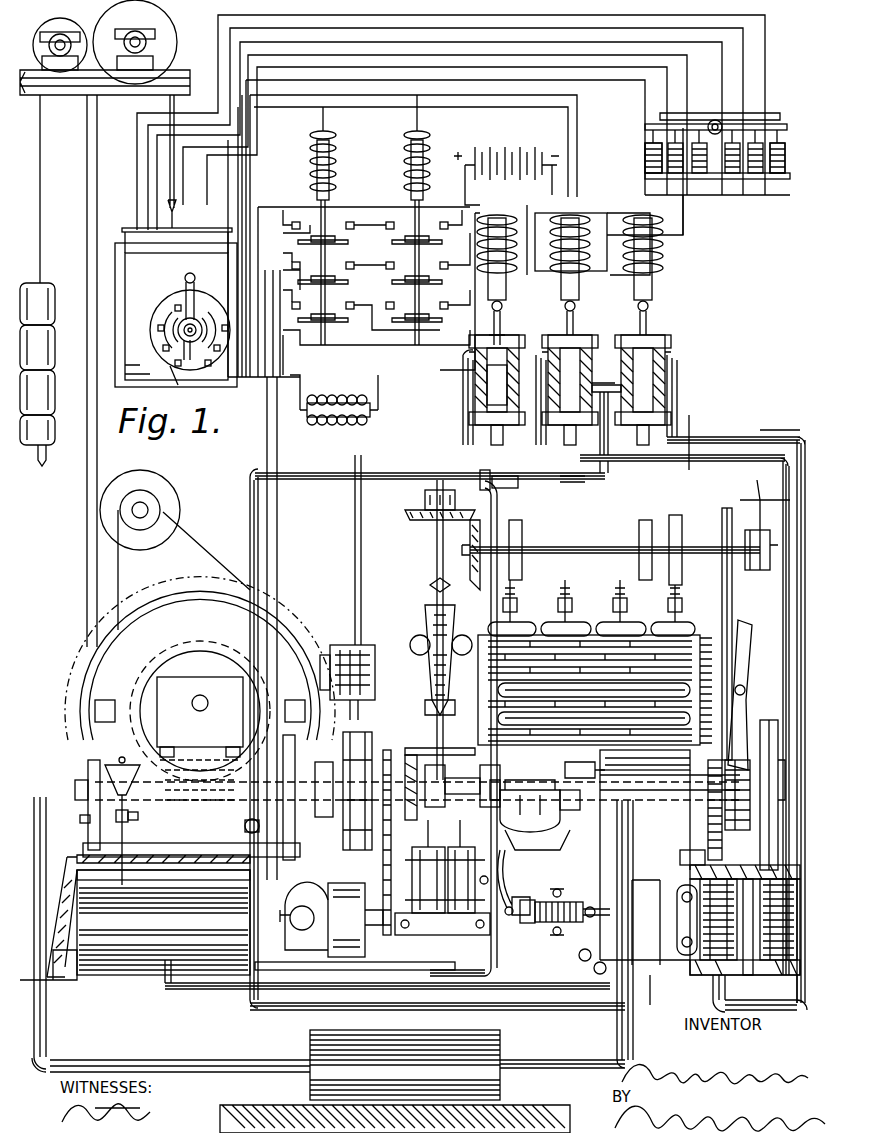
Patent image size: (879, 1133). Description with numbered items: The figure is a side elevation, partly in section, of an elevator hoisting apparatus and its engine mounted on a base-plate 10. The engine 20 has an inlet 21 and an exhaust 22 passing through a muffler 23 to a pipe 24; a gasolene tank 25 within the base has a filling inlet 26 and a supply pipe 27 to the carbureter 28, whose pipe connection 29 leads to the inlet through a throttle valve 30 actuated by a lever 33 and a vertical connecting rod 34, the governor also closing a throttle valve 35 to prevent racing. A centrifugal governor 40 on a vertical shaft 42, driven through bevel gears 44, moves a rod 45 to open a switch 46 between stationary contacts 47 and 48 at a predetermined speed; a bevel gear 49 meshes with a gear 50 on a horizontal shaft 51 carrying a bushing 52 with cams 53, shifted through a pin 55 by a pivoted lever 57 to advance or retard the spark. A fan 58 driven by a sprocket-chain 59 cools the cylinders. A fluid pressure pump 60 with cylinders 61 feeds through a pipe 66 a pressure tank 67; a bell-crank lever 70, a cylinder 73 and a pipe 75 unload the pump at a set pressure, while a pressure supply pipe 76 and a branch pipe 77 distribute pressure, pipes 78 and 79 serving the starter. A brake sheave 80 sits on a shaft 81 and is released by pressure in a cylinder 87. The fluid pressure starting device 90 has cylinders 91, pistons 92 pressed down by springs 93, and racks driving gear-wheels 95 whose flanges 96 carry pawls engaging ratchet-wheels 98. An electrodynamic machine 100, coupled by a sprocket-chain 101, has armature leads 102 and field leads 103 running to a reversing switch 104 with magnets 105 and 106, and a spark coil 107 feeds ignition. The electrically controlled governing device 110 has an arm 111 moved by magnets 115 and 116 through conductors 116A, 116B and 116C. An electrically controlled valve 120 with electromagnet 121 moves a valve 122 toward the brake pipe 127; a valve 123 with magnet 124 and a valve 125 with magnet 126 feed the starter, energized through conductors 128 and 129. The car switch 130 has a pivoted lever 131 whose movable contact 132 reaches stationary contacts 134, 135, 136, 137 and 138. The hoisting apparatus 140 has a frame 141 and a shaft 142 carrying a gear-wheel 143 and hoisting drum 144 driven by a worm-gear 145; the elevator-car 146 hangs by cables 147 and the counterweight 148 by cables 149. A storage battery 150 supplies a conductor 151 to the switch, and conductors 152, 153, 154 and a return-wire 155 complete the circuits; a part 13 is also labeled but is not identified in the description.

The base-plate 10 is at (70, 865).
The pump plunger 13 is at (446, 866).
The engine 20 is at (655, 625).
The engine inlet 21 is at (645, 850).
The outlet or exhaust 22 is at (695, 690).
The muffler 23 is at (498, 1041).
The pipe 24 is at (78, 805).
The gasolene tank 25 is at (130, 975).
The filling inlet 26 is at (122, 810).
The supply pipe 27 is at (437, 1005).
The carbureter 28 is at (534, 815).
The pipe connection 29 is at (570, 810).
The throttle valve 30 is at (588, 798).
The lever 33 is at (670, 788).
The vertical connecting rod 34 is at (690, 395).
The throttle valve 35 is at (585, 768).
The centrifugal governor 40 is at (428, 613).
The vertical shaft 42 is at (437, 553).
The bevel gears 44 is at (405, 750).
The rod 45 is at (530, 508).
The switch 46 is at (510, 485).
The stationary contact 47 is at (465, 455).
The stationary contact 48 is at (430, 498).
The bevel gear 49 is at (414, 533).
The gear 50 is at (474, 574).
The horizontal shaft 51 is at (466, 555).
The bushing 52 is at (615, 565).
The cams 53 is at (518, 545).
The pin 55 is at (668, 540).
The pivoted lever 57 is at (761, 525).
The fan 58 is at (750, 695).
The sprocket-chain 59 is at (732, 585).
The fluid pressure pump 60 is at (400, 842).
The cylinders 61 is at (417, 833).
The pipe 66 is at (332, 934).
The pressure tank 67 is at (658, 990).
The bell-crank lever 70 is at (510, 886).
The cylinder 73 is at (580, 898).
The pipe 75 is at (599, 940).
The pressure supply pipe 76 is at (671, 746).
The branch pipe 77 is at (168, 925).
The pipe 78 is at (780, 650).
The pipe 79 is at (735, 438).
The brake sheave 80 is at (355, 732).
The shaft 81 is at (78, 782).
The cylinder 87 is at (375, 670).
The fluid pressure starting device 90 is at (706, 852).
The cylinders 91 is at (738, 927).
The pistons 92 is at (744, 993).
The springs 93 is at (769, 989).
The gear-wheels 95 is at (708, 808).
The flanges 96 is at (752, 742).
The ratchet-wheels 98 is at (772, 786).
The electrodynamic machine 100 is at (370, 935).
The sprocket-chain 101 is at (355, 870).
The leads 102 is at (258, 452).
The leads 103 is at (285, 565).
The reversing switch 104 is at (376, 151).
The actuating magnet 105 is at (312, 160).
The actuating magnet 106 is at (428, 148).
The spark coil 107 is at (330, 395).
The electrically controlled governing device 110 is at (755, 104).
The arm 111 is at (775, 116).
The electromagnets or solenoids 115 is at (647, 162).
The magnets 116 is at (778, 142).
The conductor 116A is at (150, 140).
The conductor 116B is at (225, 62).
The conductor 116C is at (766, 44).
The electrically controlled valve 120 is at (470, 378).
The electromagnet 121 is at (500, 264).
The valve 122 is at (485, 398).
The valve 123 is at (585, 362).
The magnet 124 is at (580, 270).
The valve 125 is at (678, 345).
The controlling magnet 126 is at (655, 275).
The pipe 127 is at (313, 374).
The conductor 128 is at (185, 192).
The conductor 129 is at (598, 230).
The car switch 130 is at (215, 385).
The pivoted lever 131 is at (198, 300).
The movable contact 132 is at (187, 290).
The stationary contact 134 is at (188, 345).
The stationary contact 135 is at (172, 350).
The stationary contact 136 is at (158, 325).
The stationary contact 137 is at (155, 378).
The stationary contact 138 is at (174, 383).
The elevator hoisting apparatus 140 is at (100, 603).
The frame 141 is at (105, 677).
The shaft 142 is at (200, 734).
The gear-wheel 143 is at (172, 652).
The winding or hoisting drum 144 is at (85, 712).
The worm-gear 145 is at (242, 822).
The elevator-car 146 is at (122, 242).
The ropes or cables 147 is at (105, 323).
The counterweight 148 is at (58, 457).
The ropes or cables 149 is at (42, 240).
The storage battery 150 is at (500, 148).
The conductor 151 is at (290, 205).
The conductor 152 is at (586, 160).
The conductor 153 is at (509, 327).
The conductor 154 is at (536, 185).
The return-wire 155 is at (645, 181).